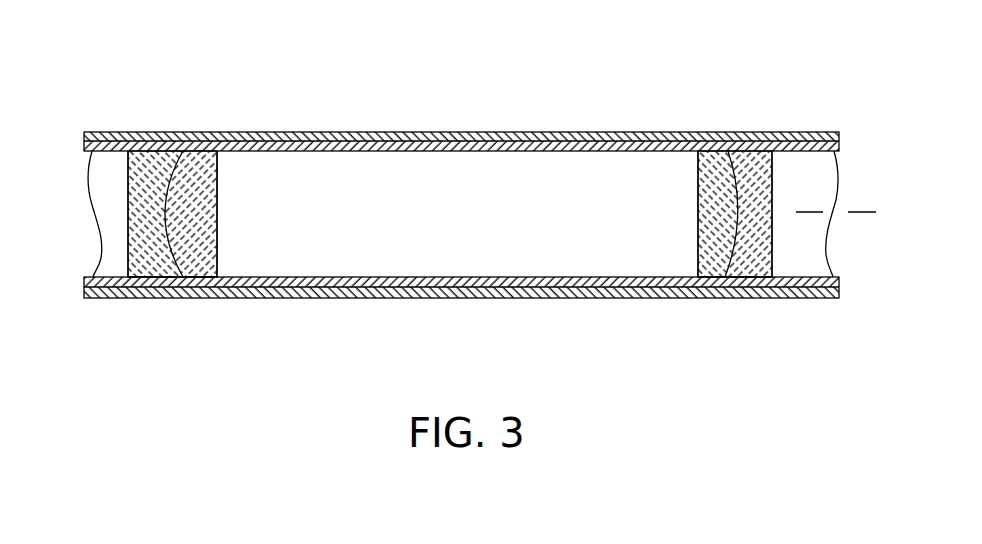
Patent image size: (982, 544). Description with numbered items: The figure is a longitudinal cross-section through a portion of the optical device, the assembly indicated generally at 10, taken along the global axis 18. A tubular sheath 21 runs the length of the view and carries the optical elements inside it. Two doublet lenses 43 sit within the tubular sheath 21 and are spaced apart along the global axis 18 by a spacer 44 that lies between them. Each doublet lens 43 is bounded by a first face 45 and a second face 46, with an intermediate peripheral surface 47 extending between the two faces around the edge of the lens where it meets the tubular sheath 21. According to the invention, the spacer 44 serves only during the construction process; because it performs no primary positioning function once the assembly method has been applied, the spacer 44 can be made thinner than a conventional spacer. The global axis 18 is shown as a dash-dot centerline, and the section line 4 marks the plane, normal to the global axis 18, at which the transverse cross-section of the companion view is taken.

The heat exchanger assembly 10 is at (566, 96).
The tubular sheath 21 is at (630, 132).
The spacer 44 is at (356, 148).
The doublet lens 43 is at (153, 168).
The first face 45 is at (128, 191).
The second face 46 is at (217, 230).
The intermediate peripheral surface 47 is at (151, 284).
The global axis 18 is at (852, 208).
The section line 4- 4 is at (506, 76).